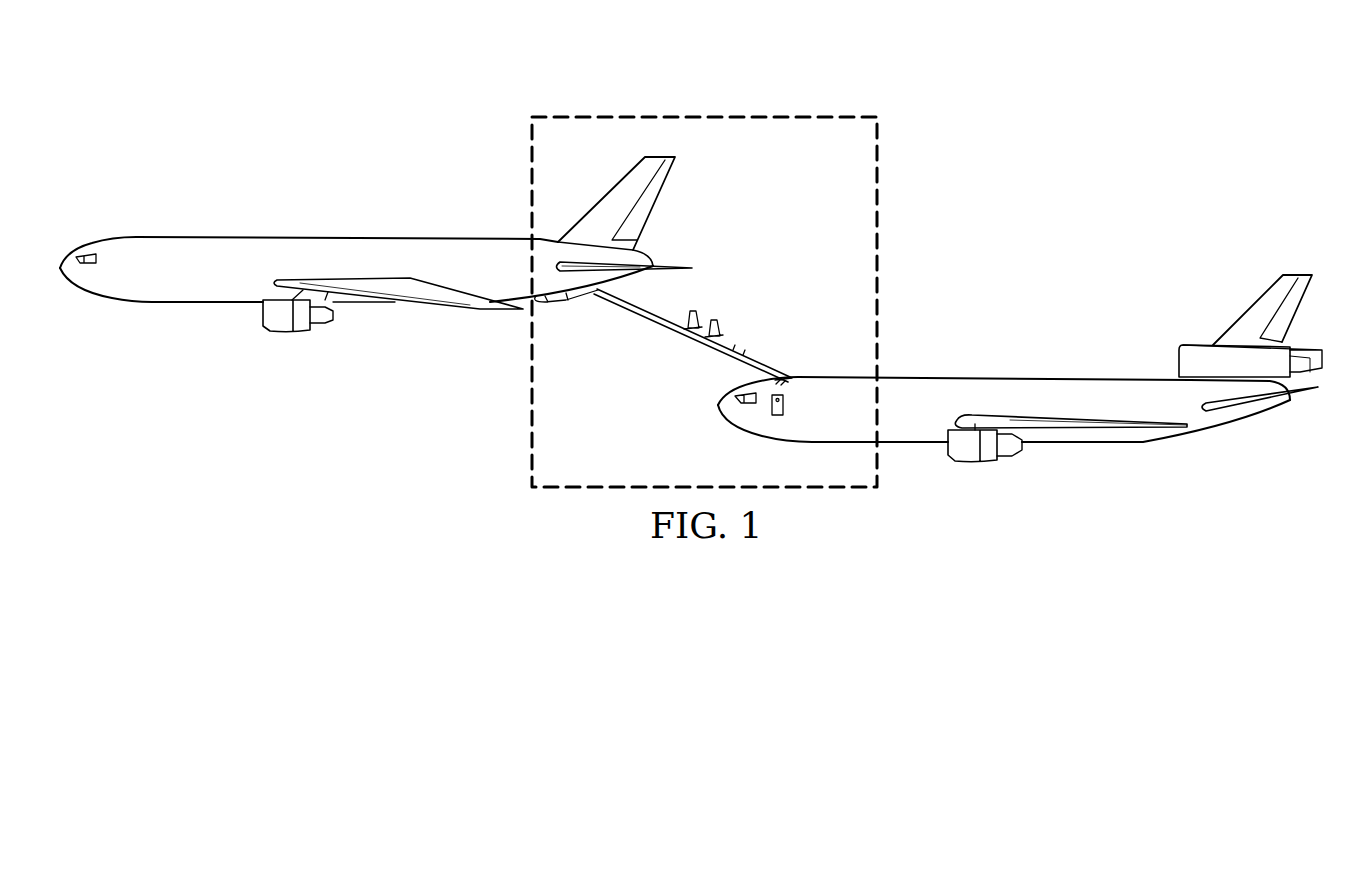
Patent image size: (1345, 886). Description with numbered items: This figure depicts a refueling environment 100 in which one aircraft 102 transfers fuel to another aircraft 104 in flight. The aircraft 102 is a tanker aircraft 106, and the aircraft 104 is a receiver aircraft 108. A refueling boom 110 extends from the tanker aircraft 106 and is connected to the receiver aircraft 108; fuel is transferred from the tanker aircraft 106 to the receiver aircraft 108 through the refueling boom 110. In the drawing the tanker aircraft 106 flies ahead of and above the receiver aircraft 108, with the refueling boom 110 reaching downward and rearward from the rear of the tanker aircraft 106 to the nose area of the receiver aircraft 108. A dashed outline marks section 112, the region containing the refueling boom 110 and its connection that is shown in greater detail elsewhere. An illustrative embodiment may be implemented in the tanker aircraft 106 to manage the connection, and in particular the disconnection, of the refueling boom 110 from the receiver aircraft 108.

The refueling environment 100 is at (964, 72).
The aircraft 102 is at (258, 198).
The aircraft 104 is at (1058, 339).
The tanker aircraft 106 is at (322, 236).
The receiver aircraft 108 is at (995, 375).
The refueling boom 110 is at (705, 334).
The section 112 is at (777, 115).